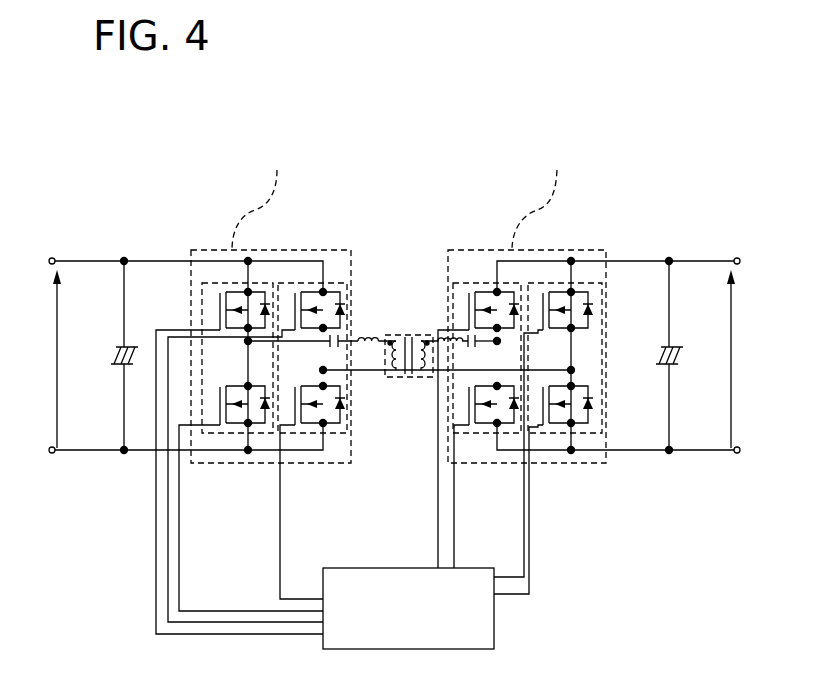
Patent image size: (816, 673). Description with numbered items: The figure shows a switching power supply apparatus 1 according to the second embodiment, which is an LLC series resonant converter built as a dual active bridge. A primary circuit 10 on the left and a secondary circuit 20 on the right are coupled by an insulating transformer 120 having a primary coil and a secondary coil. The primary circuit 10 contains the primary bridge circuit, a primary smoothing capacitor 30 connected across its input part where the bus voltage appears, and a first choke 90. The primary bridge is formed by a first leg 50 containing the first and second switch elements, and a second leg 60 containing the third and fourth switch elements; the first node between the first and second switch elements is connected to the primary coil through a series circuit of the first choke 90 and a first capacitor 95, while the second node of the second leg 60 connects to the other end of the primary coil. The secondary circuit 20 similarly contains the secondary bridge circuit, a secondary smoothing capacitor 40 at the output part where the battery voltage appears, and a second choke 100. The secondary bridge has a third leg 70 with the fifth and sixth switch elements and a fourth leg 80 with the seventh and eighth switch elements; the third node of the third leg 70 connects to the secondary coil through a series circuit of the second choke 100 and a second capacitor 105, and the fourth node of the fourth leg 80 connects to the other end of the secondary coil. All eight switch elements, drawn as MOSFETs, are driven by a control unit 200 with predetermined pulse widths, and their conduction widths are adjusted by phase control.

The switching power supply apparatus 1 is at (517, 118).
The primary circuit 10 is at (176, 197).
The secondary circuit 20 is at (626, 197).
The primary smoothing capacitor 30 is at (120, 348).
The secondary smoothing capacitor 40 is at (674, 347).
The first leg 50 is at (221, 433).
The second leg 60 is at (311, 433).
The third leg 70 is at (473, 433).
The fourth leg 80 is at (552, 433).
The first choke 90 is at (378, 334).
The first capacitor 95 is at (340, 349).
The second choke 100 is at (440, 334).
The second capacitor 105 is at (466, 345).
The transformer 120 is at (413, 378).
The control unit 200 is at (393, 618).